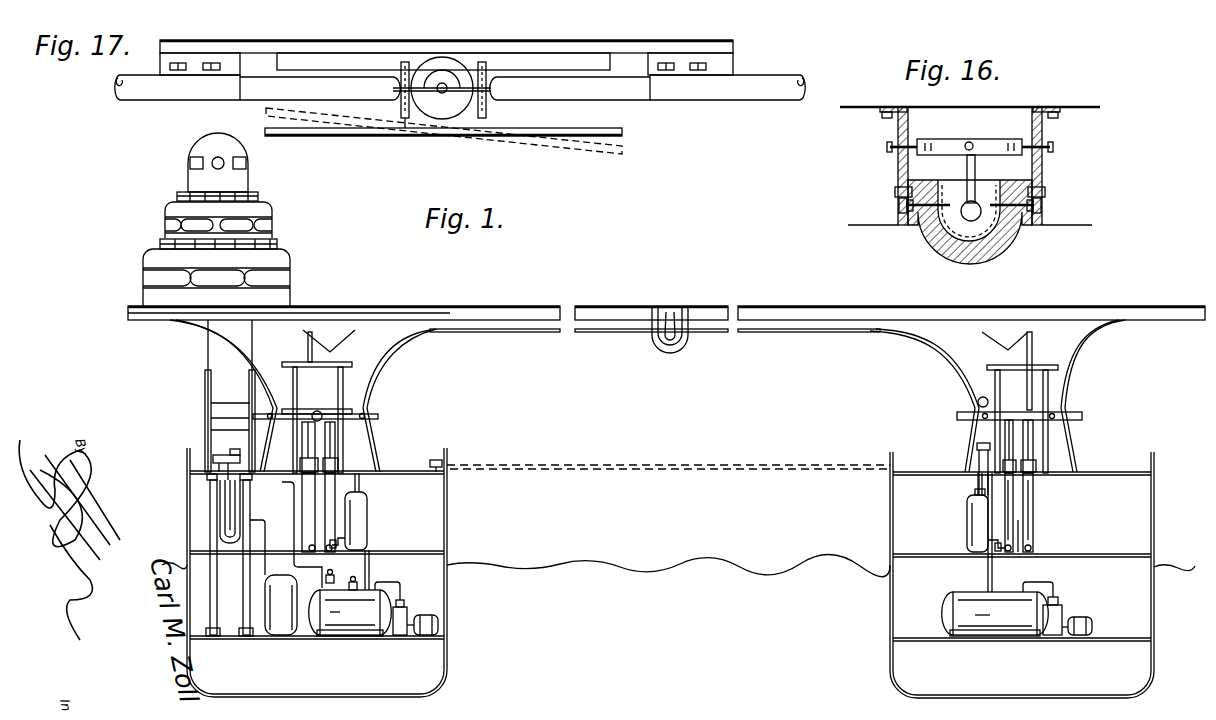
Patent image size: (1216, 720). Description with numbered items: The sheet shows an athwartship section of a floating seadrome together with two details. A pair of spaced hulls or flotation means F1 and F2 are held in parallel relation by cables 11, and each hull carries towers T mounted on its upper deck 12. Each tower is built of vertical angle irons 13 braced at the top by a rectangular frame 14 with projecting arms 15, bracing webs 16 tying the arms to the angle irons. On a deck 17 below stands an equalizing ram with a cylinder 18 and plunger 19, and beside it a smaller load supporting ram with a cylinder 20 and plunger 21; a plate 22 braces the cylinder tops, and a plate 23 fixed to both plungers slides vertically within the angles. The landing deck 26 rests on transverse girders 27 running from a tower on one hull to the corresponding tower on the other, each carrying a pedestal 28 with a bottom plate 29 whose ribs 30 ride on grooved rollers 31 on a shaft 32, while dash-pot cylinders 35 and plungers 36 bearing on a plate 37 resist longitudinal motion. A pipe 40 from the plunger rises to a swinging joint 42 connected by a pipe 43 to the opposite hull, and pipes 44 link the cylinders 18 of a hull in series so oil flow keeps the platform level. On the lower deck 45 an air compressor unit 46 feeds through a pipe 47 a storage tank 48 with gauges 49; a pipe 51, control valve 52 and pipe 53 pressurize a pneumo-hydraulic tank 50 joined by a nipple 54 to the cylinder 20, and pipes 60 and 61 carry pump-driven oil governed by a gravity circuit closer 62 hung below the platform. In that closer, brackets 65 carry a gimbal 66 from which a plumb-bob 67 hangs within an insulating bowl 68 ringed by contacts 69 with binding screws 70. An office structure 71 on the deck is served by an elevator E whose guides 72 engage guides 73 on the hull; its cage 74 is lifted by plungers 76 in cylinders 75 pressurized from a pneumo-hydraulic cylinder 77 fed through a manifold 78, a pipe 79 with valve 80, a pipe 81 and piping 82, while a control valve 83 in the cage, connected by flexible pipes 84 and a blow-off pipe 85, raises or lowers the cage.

In FIG. 1, the cables 11 is at (669, 466).
In FIG. 1, the upper deck 12 is at (450, 480).
In FIG. 1, the vertical angle irons 13 is at (366, 440).
In FIG. 1, the rectangular structural steel frame 14 is at (332, 368).
In FIG. 1, the projecting arms 15 is at (362, 361).
In FIG. 1, the bracing webs 16 is at (370, 378).
In FIG. 1, the deck 17 is at (418, 556).
In FIG. 1, the cylinder 18 is at (302, 510).
In FIG. 1, the plunger 19 is at (302, 450).
In FIG. 1, the cylinder 20 is at (360, 488).
In FIG. 1, the plunger 21 is at (337, 452).
In FIG. 1, the plate 22 is at (300, 463).
In FIG. 17, the plate 23 is at (305, 132).
In FIG. 1, the plate 23 is at (300, 430).
In FIG. 1, the landing and take off deck 26 is at (462, 305).
In FIG. 1, the transverse girders 27 is at (528, 293).
In FIG. 1, the stool or pedestal 28 is at (398, 340).
In FIG. 17, the bottom plate 29 is at (380, 46).
In FIG. 1, the bottom plate 29 is at (352, 410).
In FIG. 17, the parallel ribs 30 is at (325, 60).
In FIG. 17, the grooved rollers 31 is at (440, 65).
In FIG. 1, the grooved rollers 31 is at (324, 404).
In FIG. 17, the shaft 32 is at (445, 85).
In FIG. 1, the pneumatic dash-pot cylinder 35 is at (378, 415).
In FIG. 17, the plunger 36 is at (290, 85).
In FIG. 1, the plunger 36 is at (352, 420).
In FIG. 17, the plate 37 is at (400, 105).
In FIG. 1, the pipe 40 is at (305, 337).
In FIG. 1, the flexible swinging joint 42 is at (330, 345).
In FIG. 1, the pipe 43 is at (510, 333).
In FIG. 1, the pipes 44 is at (302, 546).
In FIG. 1, the lower deck 45 is at (430, 638).
In FIG. 1, the air compressor unit 46 is at (410, 612).
In FIG. 1, the pipe 47 is at (400, 583).
In FIG. 1, the main storage tank 48 is at (355, 632).
In FIG. 1, the temperature and pressure gauges 49 is at (353, 588).
In FIG. 1, the pneumo-hydraulic tank 50 is at (367, 525).
In FIG. 1, the pipe 51 is at (373, 567).
In FIG. 1, the control valve 52 is at (432, 460).
In FIG. 1, the pipe 53 is at (367, 500).
In FIG. 1, the nipple 54 is at (345, 538).
In FIG. 1, the pipe 60 is at (1008, 557).
In FIG. 1, the pipe 61 is at (330, 553).
In FIG. 16, the gravity actuated multiple pole circuit closer 62 is at (952, 258).
In FIG. 1, the gravity actuated multiple pole circuit closer 62 is at (694, 349).
In FIG. 16, the brackets 65 is at (898, 125).
In FIG. 16, the gimbal device 66 is at (993, 133).
In FIG. 16, the plumb-bob 67 is at (976, 171).
In FIG. 16, the bowl 68 is at (1003, 250).
In FIG. 16, the contact members 69 is at (930, 232).
In FIG. 16, the binding screws 70 is at (899, 205).
In FIG. 1, the structure 71 is at (285, 258).
In FIG. 1, the guides 72 is at (250, 350).
In FIG. 1, the guides 73 is at (211, 403).
In FIG. 1, the cage 74 is at (211, 418).
In FIG. 1, the cylinders 75 is at (243, 603).
In FIG. 1, the plungers 76 is at (207, 477).
In FIG. 1, the pneumo-hydraulic cylinder 77 is at (282, 636).
In FIG. 1, the manifold 78 is at (240, 478).
In FIG. 1, the pipe 79 is at (293, 495).
In FIG. 1, the valve 80 is at (326, 579).
In FIG. 1, the pipe 81 is at (246, 560).
In FIG. 1, the piping 82 is at (232, 637).
In FIG. 1, the control valve 83 is at (240, 446).
In FIG. 1, the flexible pipes 84 is at (220, 510).
In FIG. 1, the blow-off pipe 85 is at (213, 455).
In FIG. 1, the elevator E is at (197, 422).
In FIG. 1, the towers T is at (297, 357).
In FIG. 1, the hull or flotation means F1 is at (447, 530).
In FIG. 1, the hull or flotation means F2 is at (890, 521).